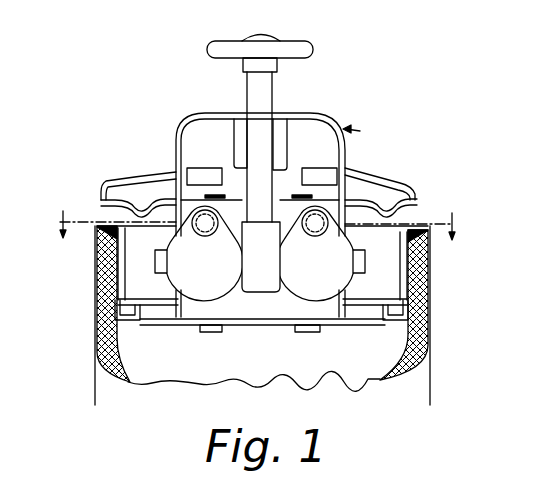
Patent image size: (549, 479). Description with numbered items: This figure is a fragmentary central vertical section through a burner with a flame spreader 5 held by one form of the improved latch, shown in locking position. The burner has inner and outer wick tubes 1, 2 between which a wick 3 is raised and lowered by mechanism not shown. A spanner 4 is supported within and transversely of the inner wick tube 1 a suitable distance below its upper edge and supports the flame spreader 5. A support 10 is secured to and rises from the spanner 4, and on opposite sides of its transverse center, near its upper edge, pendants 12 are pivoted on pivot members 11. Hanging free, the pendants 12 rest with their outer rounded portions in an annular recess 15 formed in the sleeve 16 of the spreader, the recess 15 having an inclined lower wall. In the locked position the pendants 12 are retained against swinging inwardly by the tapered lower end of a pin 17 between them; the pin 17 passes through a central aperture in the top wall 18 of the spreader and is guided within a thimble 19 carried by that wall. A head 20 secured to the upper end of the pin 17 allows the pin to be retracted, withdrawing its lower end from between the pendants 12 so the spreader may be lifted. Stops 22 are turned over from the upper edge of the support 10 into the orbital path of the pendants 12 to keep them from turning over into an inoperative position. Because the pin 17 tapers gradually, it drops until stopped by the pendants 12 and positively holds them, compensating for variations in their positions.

The inner wick tube 1 is at (124, 341).
The outer wick tube 2 is at (100, 343).
The wick 3 is at (97, 294).
The spanner 4 is at (386, 340).
The flame spreader 5 is at (354, 135).
The support 10 is at (268, 326).
The pivot members 11 is at (204, 209).
The pendants 12 is at (260, 253).
The annular recess 15 is at (162, 252).
The sleeve 16 is at (346, 185).
The pin 17 is at (274, 191).
The top wall 18 is at (216, 114).
The thimble 19 is at (288, 140).
The head 20 is at (292, 44).
The stops 22 is at (229, 196).